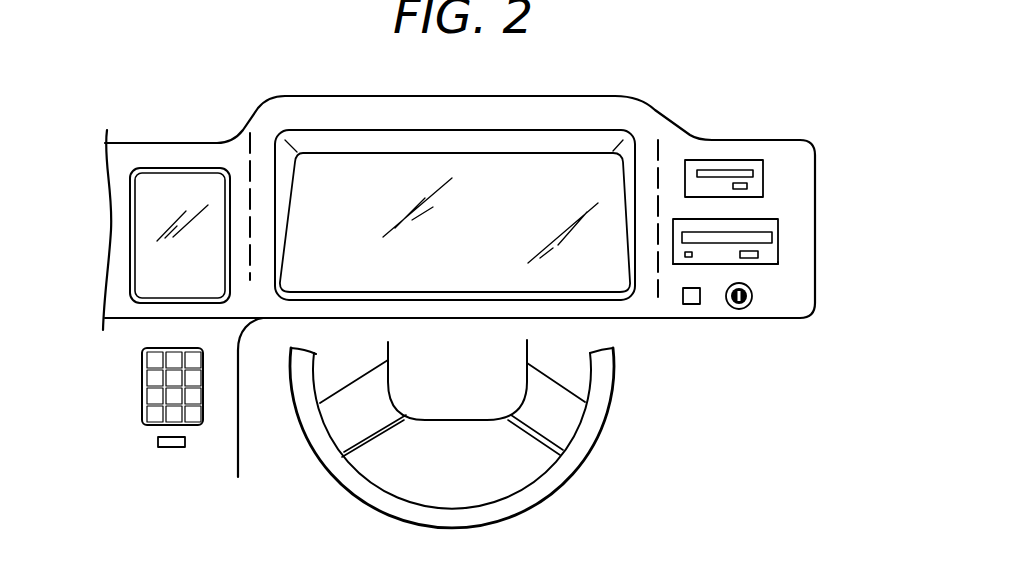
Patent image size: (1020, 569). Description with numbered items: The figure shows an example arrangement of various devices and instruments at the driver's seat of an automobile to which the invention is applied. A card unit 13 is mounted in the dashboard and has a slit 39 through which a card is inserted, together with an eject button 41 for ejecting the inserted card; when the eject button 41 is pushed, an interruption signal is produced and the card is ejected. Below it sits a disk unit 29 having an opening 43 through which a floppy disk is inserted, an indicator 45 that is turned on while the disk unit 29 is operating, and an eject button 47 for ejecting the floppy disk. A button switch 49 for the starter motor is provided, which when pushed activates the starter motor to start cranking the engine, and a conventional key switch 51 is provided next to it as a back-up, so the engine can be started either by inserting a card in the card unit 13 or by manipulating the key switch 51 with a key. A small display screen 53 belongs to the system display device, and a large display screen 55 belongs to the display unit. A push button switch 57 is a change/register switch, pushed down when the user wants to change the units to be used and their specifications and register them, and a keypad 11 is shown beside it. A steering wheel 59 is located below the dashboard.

The keypad 11 is at (142, 392).
The card unit 13 is at (748, 161).
The disk unit 29 is at (778, 227).
The slit 39 is at (753, 173).
The eject button 41 is at (747, 186).
The opening 43 is at (758, 254).
The indicator 45 is at (688, 258).
The eject button 47 is at (758, 262).
The button switch 49 is at (692, 304).
The key switch 51 is at (742, 309).
The display screen 53 is at (180, 187).
The display screen 55 is at (542, 165).
The push button switch 57 is at (158, 441).
The steering wheel 59 is at (577, 463).